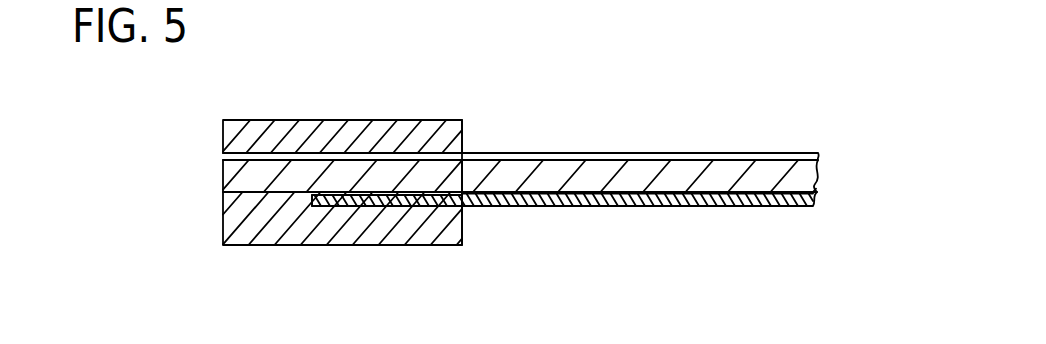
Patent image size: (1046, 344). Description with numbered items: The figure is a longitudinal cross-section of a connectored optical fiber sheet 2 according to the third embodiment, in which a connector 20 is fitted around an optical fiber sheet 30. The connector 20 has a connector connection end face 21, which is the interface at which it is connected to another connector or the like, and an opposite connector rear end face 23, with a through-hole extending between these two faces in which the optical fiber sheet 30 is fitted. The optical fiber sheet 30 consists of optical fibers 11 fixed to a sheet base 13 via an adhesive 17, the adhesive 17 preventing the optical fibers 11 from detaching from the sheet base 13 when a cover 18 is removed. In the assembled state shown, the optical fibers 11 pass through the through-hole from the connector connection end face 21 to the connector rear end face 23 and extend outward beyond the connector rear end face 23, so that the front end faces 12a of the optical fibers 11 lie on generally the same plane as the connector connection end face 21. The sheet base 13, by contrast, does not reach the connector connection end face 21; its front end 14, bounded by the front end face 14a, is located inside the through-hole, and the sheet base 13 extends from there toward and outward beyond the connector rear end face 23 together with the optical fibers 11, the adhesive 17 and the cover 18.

The connectored optical fiber sheet 2 is at (562, 107).
The connector 20 is at (450, 121).
The front end faces of the optical fibers 12a is at (223, 172).
The connector connection end face 21 is at (223, 226).
The connector rear end face 23 is at (463, 245).
The front end of the sheet base 14 is at (362, 204).
The front end face of the sheet base 14a is at (313, 197).
The optical fiber sheet 30 is at (893, 125).
The cover 18 is at (818, 156).
The optical fibers 11 is at (815, 183).
The sheet base 13 is at (814, 205).
The adhesive 17 is at (689, 195).